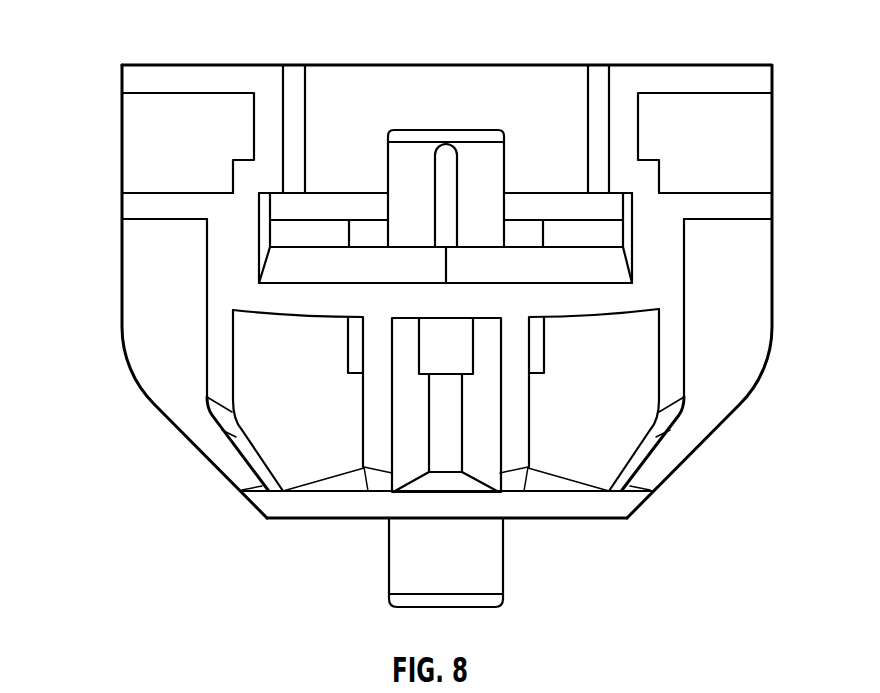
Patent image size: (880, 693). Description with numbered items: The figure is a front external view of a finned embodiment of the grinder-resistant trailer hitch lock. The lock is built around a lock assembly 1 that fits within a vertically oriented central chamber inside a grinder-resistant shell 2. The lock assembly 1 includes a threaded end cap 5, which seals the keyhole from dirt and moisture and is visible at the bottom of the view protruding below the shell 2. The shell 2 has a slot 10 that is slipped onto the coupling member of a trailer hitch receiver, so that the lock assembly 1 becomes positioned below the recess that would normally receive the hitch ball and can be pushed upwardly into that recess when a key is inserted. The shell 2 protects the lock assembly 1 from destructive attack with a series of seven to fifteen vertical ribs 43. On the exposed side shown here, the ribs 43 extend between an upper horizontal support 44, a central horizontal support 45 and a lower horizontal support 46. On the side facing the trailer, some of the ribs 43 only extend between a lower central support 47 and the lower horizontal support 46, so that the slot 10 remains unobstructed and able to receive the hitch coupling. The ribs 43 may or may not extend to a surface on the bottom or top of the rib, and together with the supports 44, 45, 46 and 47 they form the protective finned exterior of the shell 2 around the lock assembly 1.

The lock assembly 1 is at (440, 130).
The grinder-resistant shell 2 is at (130, 278).
The threaded end cap 5 is at (389, 557).
The slot 10 is at (362, 200).
The vertical ribs 43 is at (364, 413).
The upper horizontal support 44 is at (212, 78).
The central horizontal support 45 is at (122, 205).
The lower horizontal support 46 is at (250, 506).
The lower central support 47 is at (243, 298).